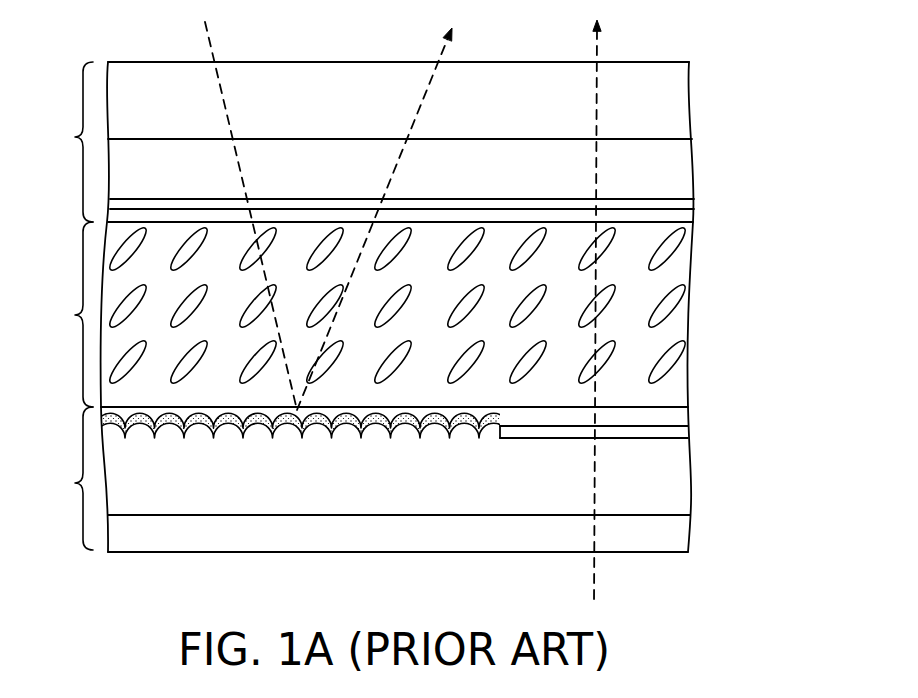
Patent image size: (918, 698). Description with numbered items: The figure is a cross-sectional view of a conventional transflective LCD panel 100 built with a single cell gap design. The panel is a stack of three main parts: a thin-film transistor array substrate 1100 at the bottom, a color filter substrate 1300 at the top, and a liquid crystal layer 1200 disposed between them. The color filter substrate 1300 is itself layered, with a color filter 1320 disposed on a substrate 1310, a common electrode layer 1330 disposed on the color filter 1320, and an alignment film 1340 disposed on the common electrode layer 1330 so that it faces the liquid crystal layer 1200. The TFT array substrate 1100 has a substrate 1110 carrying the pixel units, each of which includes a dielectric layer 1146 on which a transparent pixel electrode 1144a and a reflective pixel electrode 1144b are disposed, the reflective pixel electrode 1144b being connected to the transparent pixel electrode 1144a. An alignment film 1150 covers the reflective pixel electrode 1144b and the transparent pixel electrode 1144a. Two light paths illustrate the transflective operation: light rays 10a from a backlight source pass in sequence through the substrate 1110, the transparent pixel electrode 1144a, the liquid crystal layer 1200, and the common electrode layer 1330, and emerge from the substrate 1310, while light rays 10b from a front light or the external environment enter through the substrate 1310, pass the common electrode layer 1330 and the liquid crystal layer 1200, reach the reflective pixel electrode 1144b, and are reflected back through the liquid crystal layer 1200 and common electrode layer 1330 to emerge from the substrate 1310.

The transflective LCD panel 100 is at (740, 617).
The color filter substrate 1300 is at (56, 142).
The substrate 1310 is at (663, 100).
The color filter 1320 is at (673, 170).
The common electrode layer 1330 is at (680, 205).
The alignment film 1340 is at (680, 218).
The liquid crystal layer 1200 is at (354, 314).
The thin-film transistor array substrate 1100 is at (55, 478).
The alignment film 1150 is at (662, 415).
The transparent pixel electrode 1144a is at (666, 430).
The reflective pixel electrode 1144b is at (485, 426).
The dielectric layer 1146 is at (661, 494).
The substrate 1110 is at (661, 537).
The light rays 10a is at (603, 40).
The light rays 10b is at (200, 42).